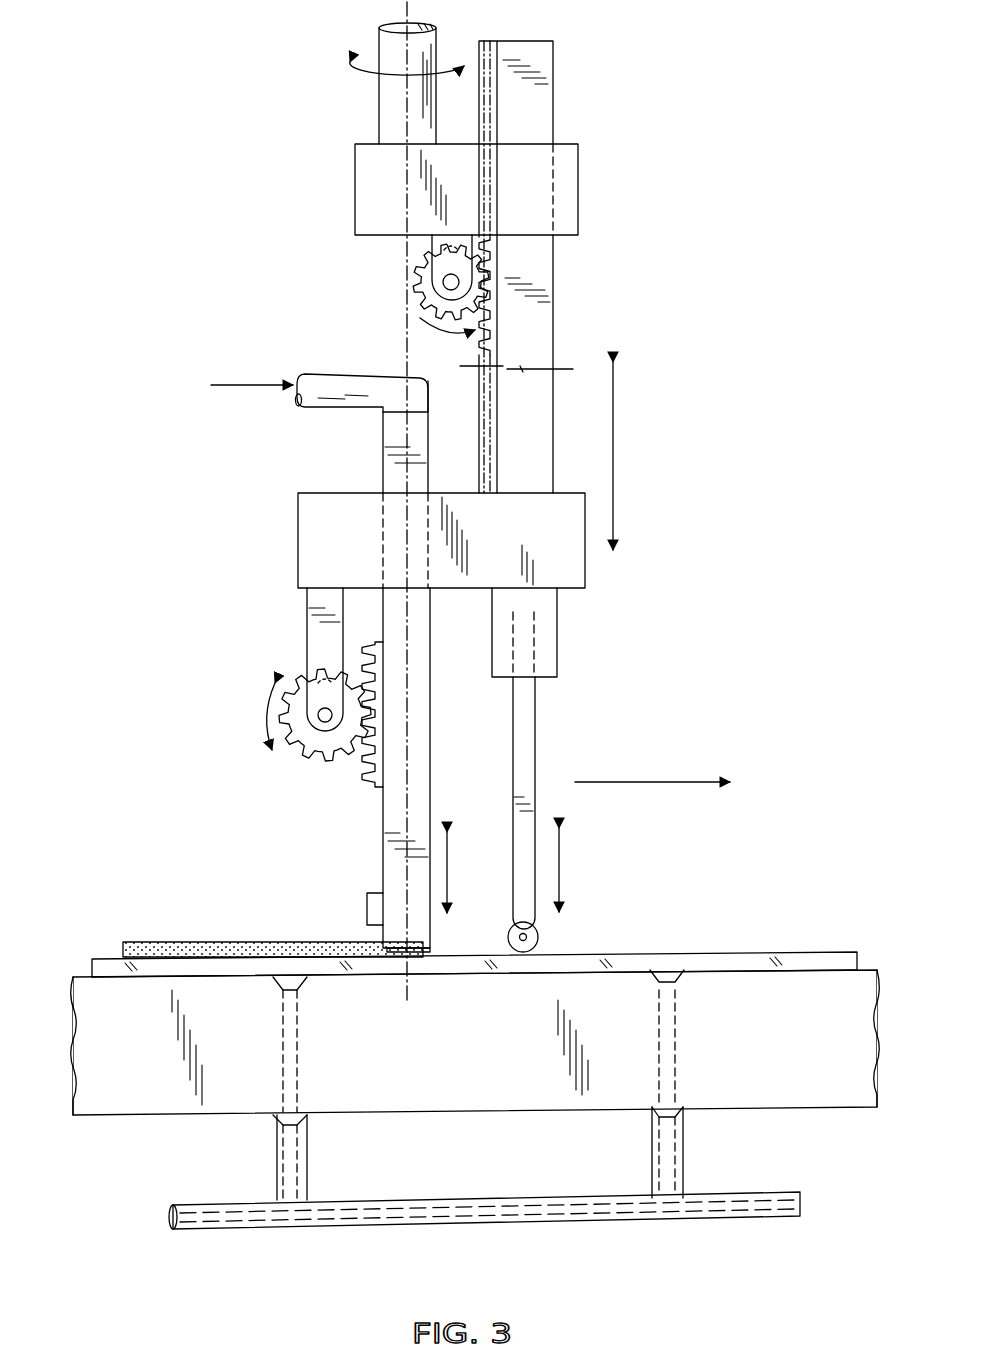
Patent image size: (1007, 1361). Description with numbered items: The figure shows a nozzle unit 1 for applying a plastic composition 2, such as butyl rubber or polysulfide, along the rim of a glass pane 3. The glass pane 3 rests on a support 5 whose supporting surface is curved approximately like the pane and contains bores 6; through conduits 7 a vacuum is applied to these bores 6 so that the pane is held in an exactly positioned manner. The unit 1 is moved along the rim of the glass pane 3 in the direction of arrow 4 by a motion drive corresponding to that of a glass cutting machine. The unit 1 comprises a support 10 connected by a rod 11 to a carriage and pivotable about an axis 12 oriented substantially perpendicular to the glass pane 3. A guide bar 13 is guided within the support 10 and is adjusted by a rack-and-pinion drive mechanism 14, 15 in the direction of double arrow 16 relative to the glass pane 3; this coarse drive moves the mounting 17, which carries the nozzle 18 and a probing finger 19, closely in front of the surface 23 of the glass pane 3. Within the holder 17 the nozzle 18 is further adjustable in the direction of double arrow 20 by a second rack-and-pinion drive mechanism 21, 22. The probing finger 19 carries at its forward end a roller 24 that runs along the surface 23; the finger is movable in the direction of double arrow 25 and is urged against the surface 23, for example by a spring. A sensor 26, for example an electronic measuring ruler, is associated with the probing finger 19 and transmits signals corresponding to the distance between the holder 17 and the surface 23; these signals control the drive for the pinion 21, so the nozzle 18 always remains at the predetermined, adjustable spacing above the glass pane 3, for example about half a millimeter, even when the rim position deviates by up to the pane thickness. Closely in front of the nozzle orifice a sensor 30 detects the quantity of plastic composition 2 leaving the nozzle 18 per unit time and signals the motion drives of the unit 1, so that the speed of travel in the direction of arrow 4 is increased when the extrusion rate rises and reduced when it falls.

The unit 1 is at (664, 546).
The plastic composition 2 is at (212, 952).
The glass pane 3 is at (788, 960).
The arrow 4 is at (658, 782).
The support 5 is at (793, 1088).
The bores 6 is at (673, 1059).
The conduits 7 is at (290, 1173).
The support 10 is at (362, 223).
The rod 11 is at (393, 125).
The axis 12 is at (400, 199).
The guide bar 13 is at (540, 102).
The rack-and-pinion drive mechanism 14 is at (418, 296).
The rack-and-pinion drive mechanism 15 is at (488, 252).
The double arrow 16 is at (613, 460).
The mounting 17 is at (313, 541).
The nozzle 18 is at (417, 938).
The probing finger 19 is at (540, 732).
The double arrow 20 is at (447, 870).
The pinion 21 is at (305, 752).
The rack 22 is at (365, 770).
The surface 23 is at (689, 950).
The roller 24 is at (543, 937).
The double arrow 25 is at (560, 870).
The sensor 26 is at (543, 628).
The sensor 30 is at (367, 903).